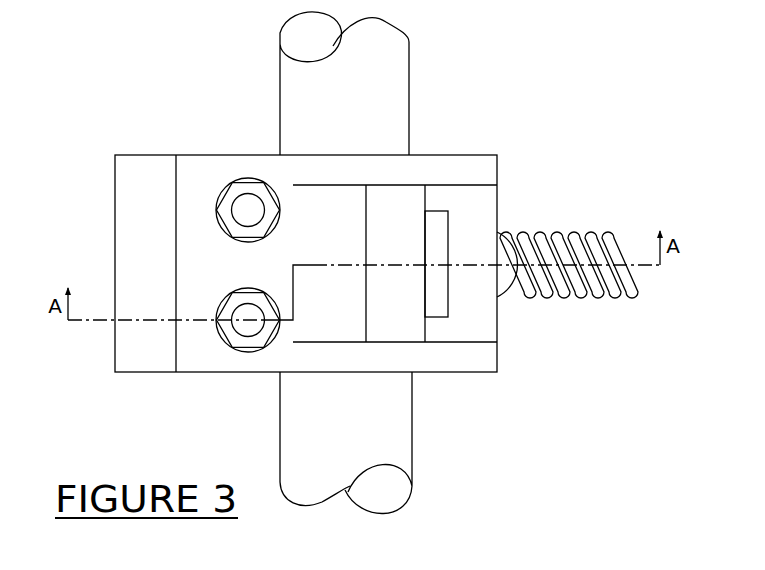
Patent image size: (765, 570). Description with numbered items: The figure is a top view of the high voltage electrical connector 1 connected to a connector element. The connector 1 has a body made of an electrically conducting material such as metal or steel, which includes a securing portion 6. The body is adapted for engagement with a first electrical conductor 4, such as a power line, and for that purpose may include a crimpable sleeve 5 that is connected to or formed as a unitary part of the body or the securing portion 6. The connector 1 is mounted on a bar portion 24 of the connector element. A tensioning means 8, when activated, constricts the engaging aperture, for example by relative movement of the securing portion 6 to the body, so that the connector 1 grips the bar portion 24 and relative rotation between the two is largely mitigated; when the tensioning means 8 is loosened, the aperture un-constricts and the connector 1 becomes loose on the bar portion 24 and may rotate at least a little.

The high voltage electrical connector 1 is at (204, 393).
The first electrical conductor 4 is at (601, 298).
The crimpable sleeve 5 is at (497, 232).
The securing portion 6 is at (139, 155).
The tensioning means 8 is at (240, 199).
The bar portion 24 is at (409, 81).